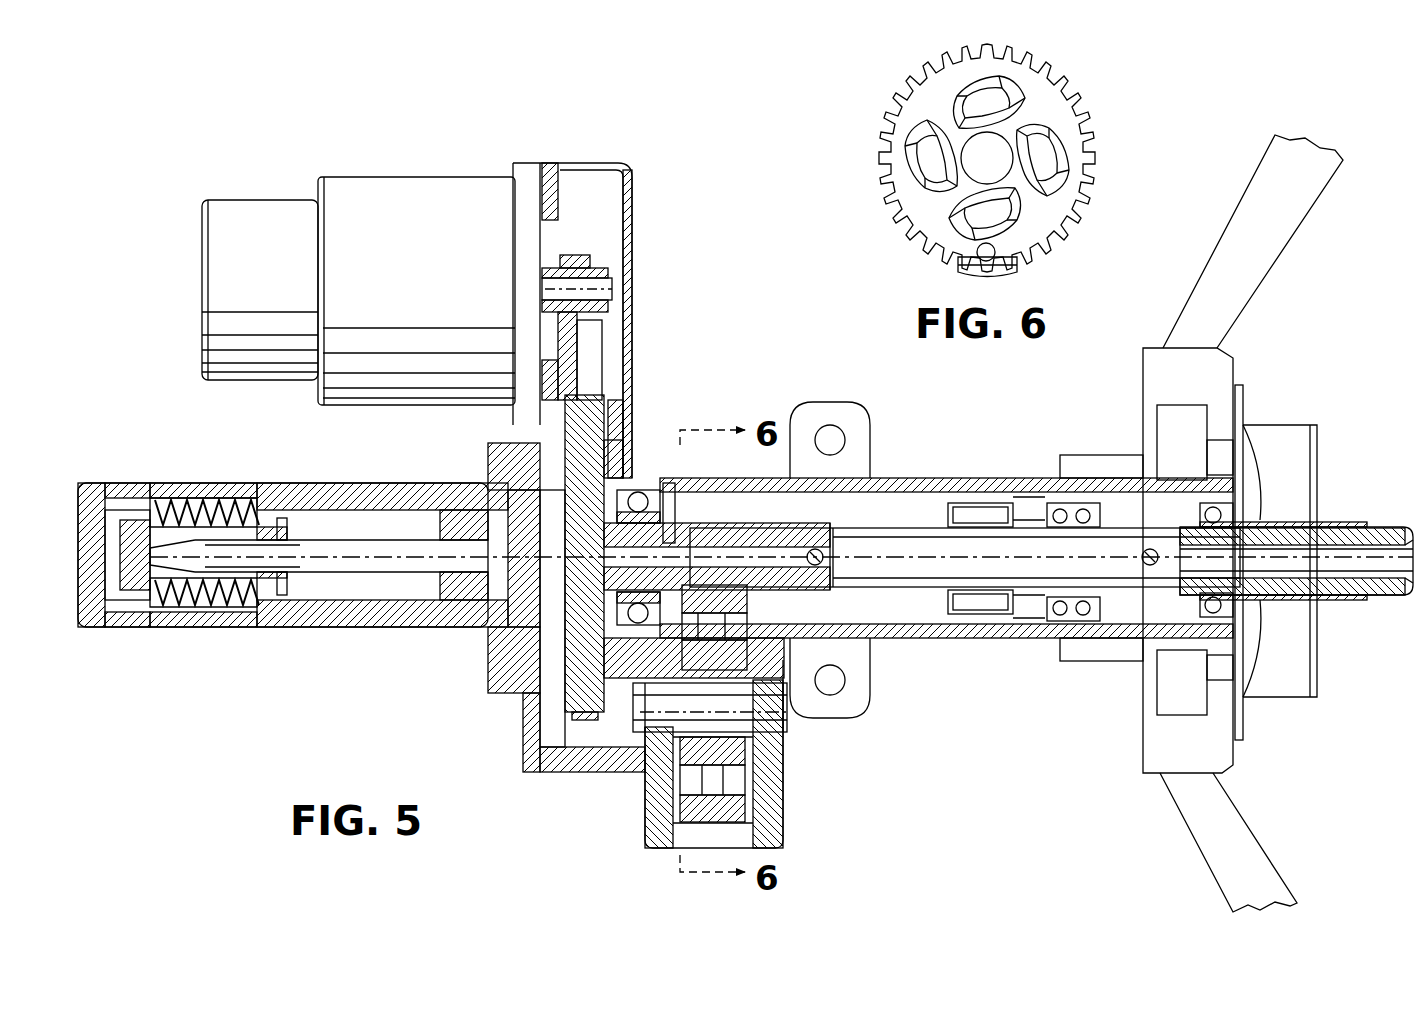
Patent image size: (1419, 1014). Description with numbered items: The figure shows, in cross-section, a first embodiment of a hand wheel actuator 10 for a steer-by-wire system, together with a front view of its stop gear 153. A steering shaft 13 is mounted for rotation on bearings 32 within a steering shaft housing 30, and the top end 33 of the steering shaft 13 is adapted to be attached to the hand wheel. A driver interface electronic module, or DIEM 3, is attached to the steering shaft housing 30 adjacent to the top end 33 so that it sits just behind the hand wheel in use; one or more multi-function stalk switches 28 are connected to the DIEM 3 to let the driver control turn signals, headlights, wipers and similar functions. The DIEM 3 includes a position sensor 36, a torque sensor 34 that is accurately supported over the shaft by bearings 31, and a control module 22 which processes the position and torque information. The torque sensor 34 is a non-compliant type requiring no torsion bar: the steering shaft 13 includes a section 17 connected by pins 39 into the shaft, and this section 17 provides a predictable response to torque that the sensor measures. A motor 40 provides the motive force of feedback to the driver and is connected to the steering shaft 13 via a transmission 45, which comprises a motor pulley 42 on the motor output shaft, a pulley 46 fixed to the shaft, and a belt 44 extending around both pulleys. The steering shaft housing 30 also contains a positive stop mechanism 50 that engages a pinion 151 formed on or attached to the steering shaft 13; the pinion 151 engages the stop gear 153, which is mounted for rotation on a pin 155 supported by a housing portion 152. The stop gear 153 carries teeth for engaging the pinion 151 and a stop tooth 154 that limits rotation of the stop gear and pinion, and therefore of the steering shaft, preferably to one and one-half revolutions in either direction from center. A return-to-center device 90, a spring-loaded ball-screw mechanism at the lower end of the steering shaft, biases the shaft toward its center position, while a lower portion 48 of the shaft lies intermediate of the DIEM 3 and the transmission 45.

In FIG. 5, the hand wheel actuator 10 is at (733, 155).
In FIG. 5, the motor 40 is at (420, 235).
In FIG. 5, the motor pulley 42 is at (600, 265).
In FIG. 5, the belt 44 is at (590, 370).
In FIG. 5, the transmission 45 is at (652, 277).
In FIG. 5, the pulley 46 is at (560, 686).
In FIG. 5, the return-to-center device 90 is at (262, 655).
In FIG. 5, the positive stop mechanism 50 is at (832, 770).
In FIG. 5, the pinion 151 is at (715, 530).
In FIG. 5, the bearings 32 is at (638, 502).
In FIG. 5, the steering shaft 13 is at (886, 525).
In FIG. 5, the lower portion 48 is at (778, 528).
In FIG. 5, the section 17 is at (965, 640).
In FIG. 5, the pins 39 is at (820, 565).
In FIG. 5, the torque sensor 34 is at (965, 515).
In FIG. 5, the steering shaft housing 30 is at (995, 640).
In FIG. 5, the bearings 31 is at (1068, 620).
In FIG. 5, the control module 22 is at (1088, 662).
In FIG. 5, the DIEM 3 is at (1148, 611).
In FIG. 5, the position sensor 36 is at (1296, 473).
In FIG. 5, the top end 33 is at (1340, 620).
In FIG. 5, the multi-function stalk switches 28 is at (1237, 218).
In FIG. 5, the housing portion 152 is at (780, 820).
In FIG. 5, the stop gear 153 is at (680, 820).
In FIG. 6, the stop gear 153 is at (1030, 62).
In FIG. 5, the pin 155 is at (652, 710).
In FIG. 6, the stop tooth 154 is at (975, 265).